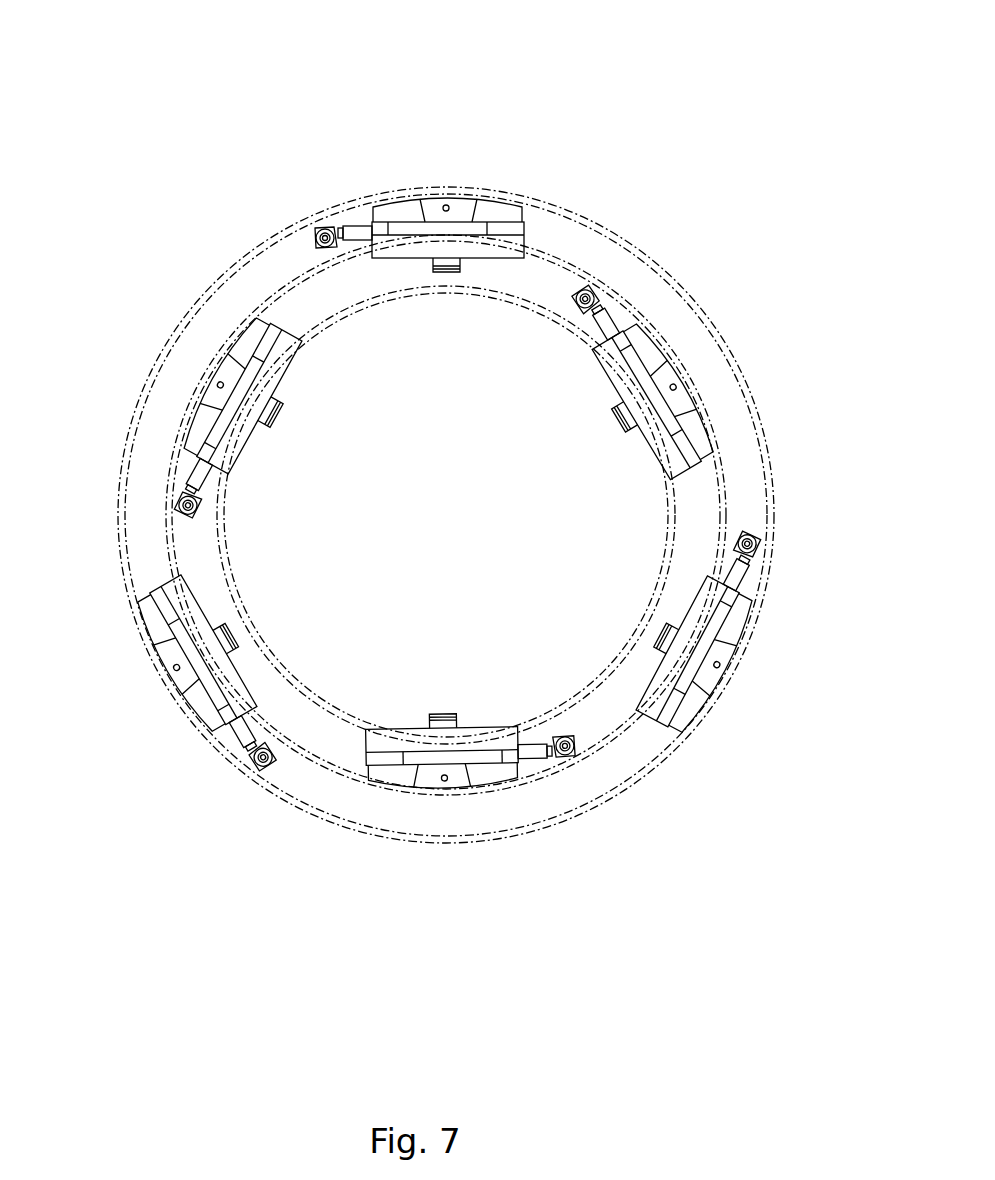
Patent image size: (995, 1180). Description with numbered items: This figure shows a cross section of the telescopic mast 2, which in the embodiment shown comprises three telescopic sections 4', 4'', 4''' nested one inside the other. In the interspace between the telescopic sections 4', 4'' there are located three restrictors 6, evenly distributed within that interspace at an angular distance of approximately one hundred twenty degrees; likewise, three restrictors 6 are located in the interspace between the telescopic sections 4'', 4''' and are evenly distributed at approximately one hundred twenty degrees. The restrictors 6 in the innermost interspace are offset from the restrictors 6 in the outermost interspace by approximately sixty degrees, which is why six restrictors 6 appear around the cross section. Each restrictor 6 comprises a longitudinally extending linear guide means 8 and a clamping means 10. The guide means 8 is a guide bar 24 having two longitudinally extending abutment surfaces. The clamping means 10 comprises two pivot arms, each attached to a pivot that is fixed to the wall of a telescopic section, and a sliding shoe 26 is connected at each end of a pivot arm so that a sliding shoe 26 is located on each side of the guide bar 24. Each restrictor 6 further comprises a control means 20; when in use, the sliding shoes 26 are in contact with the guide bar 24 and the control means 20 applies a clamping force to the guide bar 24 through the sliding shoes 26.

The telescopic mast 2 is at (250, 178).
The telescopic section 4' is at (486, 434).
The telescopic section 4'' is at (515, 515).
The telescopic section 4''' is at (446, 534).
The restrictor 6 is at (530, 167).
The linear guide means 8 is at (467, 150).
The clamping means 10 is at (232, 216).
The control means 20 is at (239, 253).
The guide bar 24 is at (446, 125).
The sliding shoe 26 is at (462, 130).